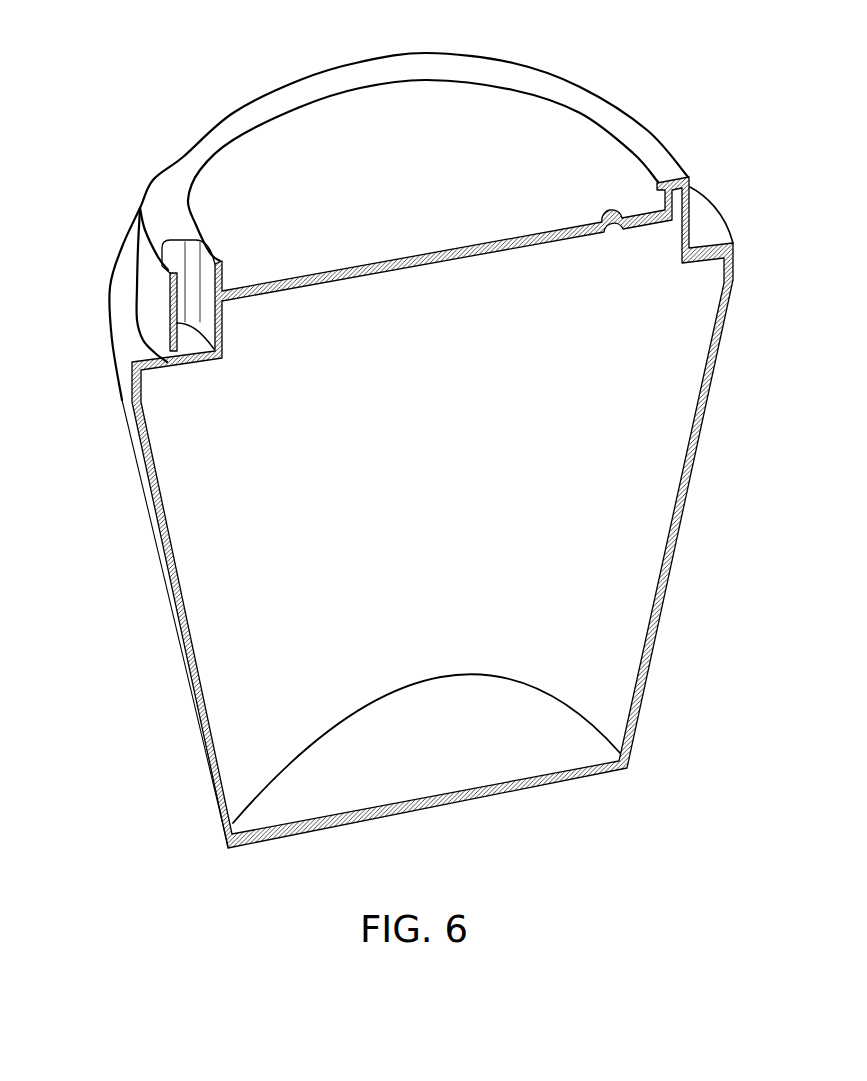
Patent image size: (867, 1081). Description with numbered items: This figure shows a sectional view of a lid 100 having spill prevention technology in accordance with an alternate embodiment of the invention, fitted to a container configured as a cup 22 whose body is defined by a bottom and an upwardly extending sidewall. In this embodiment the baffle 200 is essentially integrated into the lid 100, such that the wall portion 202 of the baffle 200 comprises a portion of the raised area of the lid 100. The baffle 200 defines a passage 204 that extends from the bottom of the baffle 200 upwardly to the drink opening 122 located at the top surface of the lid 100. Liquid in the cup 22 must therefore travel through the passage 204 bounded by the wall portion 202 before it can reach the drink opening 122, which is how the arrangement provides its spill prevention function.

The lid 100 is at (606, 46).
The cup 22 is at (684, 530).
The drink opening 122 is at (175, 232).
The baffle 200 is at (229, 335).
The wall portion 202 is at (228, 283).
The passage 204 is at (185, 318).